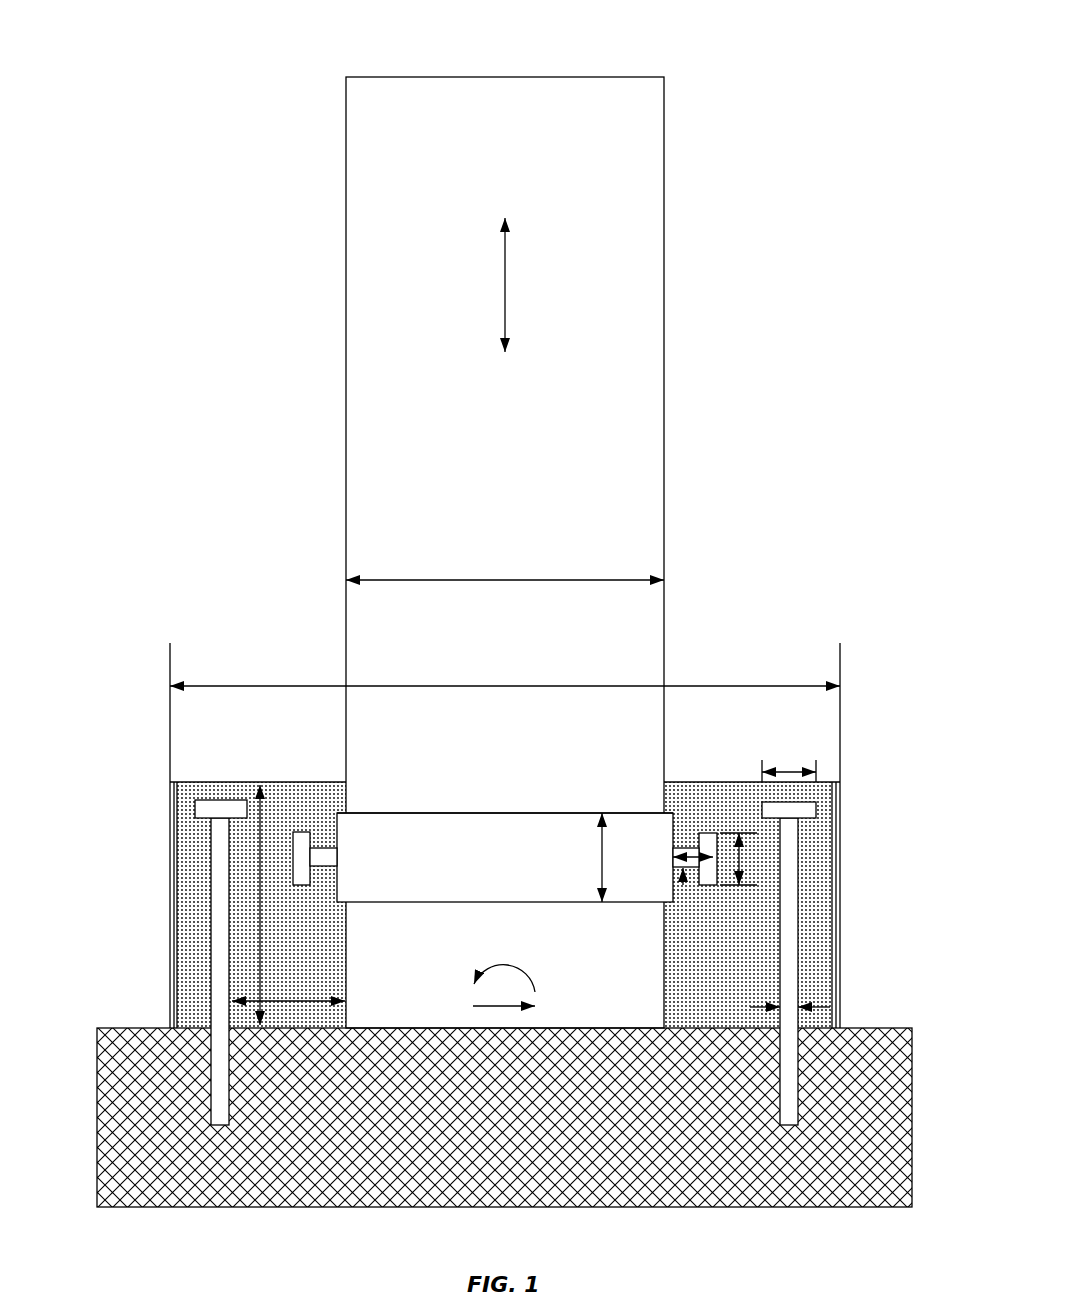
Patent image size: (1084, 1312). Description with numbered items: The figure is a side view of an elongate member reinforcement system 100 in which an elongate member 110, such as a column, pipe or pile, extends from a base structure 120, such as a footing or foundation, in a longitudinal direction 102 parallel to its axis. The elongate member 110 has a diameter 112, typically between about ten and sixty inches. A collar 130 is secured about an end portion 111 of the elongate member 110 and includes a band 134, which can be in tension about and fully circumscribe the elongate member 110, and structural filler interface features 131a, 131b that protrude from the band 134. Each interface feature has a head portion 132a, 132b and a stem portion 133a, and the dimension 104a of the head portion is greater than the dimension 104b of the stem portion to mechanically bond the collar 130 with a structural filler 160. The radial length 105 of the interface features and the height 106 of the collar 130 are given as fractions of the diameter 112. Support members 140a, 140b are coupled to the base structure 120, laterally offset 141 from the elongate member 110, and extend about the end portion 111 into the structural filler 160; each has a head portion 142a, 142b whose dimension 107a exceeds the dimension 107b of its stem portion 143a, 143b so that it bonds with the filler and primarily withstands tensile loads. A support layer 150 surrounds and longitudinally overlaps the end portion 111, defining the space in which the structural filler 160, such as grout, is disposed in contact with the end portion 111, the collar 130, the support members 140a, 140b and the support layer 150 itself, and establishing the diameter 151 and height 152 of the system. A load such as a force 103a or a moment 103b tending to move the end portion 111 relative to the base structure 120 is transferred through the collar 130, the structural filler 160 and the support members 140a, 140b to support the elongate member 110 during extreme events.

The elongate member reinforcement system 100 is at (276, 41).
The longitudinal direction 102 is at (507, 286).
The force 103a is at (500, 1008).
The moment 103b is at (505, 975).
The size or dimension of head portion 104a is at (744, 857).
The size or dimension of stem portion 104b is at (683, 847).
The radial length 105 is at (690, 852).
The height of collar 106 is at (600, 858).
The size or dimension of head portion 107a is at (797, 770).
The size or dimension of stem portion 107b is at (830, 1007).
The elongate member 110 is at (347, 312).
The end portion 111 is at (318, 798).
The diameter 112 is at (500, 578).
The base structure 120 is at (133, 1028).
The collar 130 is at (478, 792).
The structural filler interface feature 131a is at (288, 822).
The structural filler interface feature 131b is at (720, 815).
The head portion 132a is at (300, 885).
The head portion 132b is at (708, 885).
The stem portion 133a is at (322, 846).
The band 134 is at (548, 813).
The support member 140a is at (194, 893).
The support member 140b is at (816, 921).
The lateral offset 141 is at (303, 1003).
The head portion 142a is at (195, 808).
The head portion 142b is at (816, 808).
The stem portion 143a is at (211, 938).
The stem portion 143b is at (798, 878).
The support layer 150 is at (170, 850).
The diameter 151 is at (505, 684).
The height 152 is at (262, 972).
The structural filler 160 is at (718, 1011).